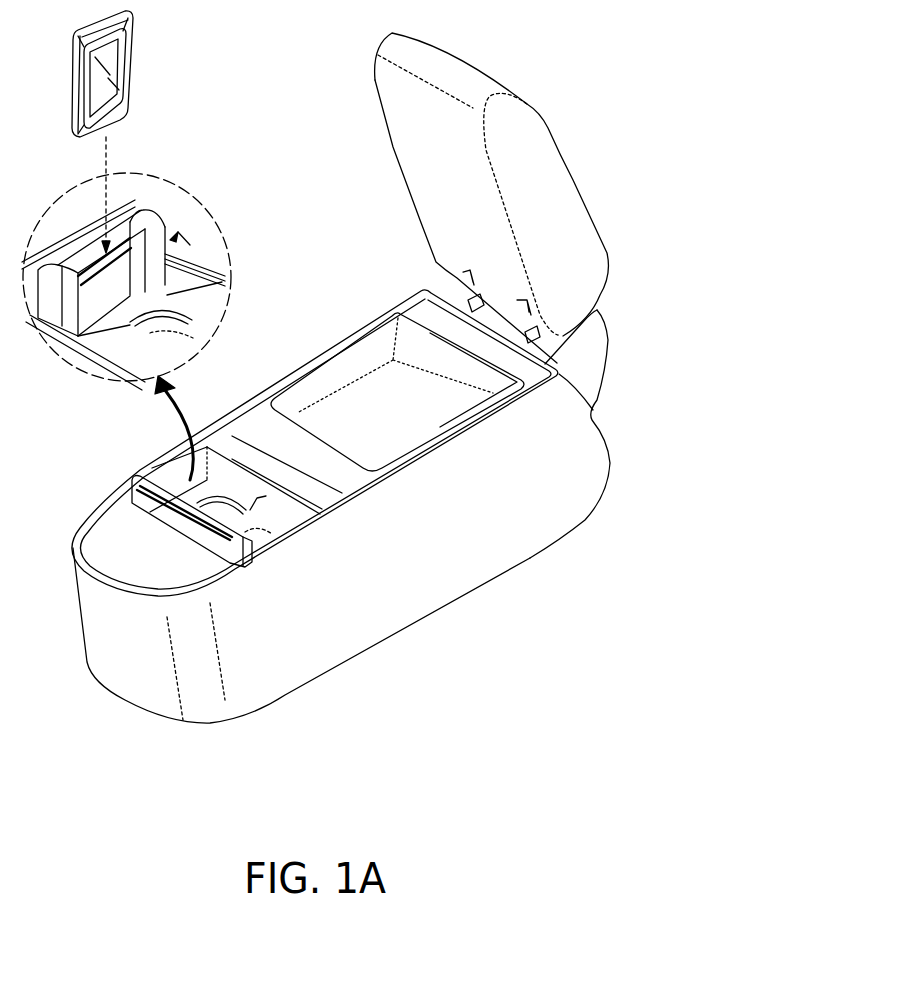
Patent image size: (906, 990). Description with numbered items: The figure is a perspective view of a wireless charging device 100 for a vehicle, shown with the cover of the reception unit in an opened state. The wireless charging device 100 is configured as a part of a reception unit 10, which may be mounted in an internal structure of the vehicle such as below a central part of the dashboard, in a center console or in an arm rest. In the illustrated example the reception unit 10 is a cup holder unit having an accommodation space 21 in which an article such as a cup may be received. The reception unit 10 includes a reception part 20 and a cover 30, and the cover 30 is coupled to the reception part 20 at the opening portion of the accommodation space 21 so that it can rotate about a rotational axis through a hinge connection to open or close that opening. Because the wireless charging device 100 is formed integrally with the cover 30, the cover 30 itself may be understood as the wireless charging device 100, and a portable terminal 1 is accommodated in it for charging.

The portable terminal 1 is at (132, 67).
The reception unit 10 is at (280, 150).
The reception part 20 is at (335, 511).
The accommodation space 21 is at (293, 500).
The cover 30 is at (227, 583).
The wireless charging device 100 is at (118, 480).